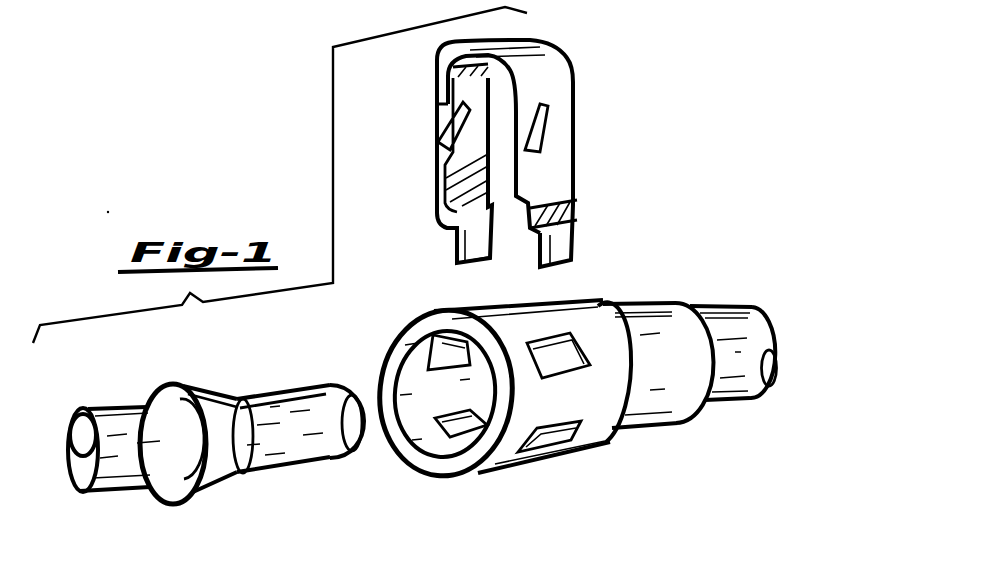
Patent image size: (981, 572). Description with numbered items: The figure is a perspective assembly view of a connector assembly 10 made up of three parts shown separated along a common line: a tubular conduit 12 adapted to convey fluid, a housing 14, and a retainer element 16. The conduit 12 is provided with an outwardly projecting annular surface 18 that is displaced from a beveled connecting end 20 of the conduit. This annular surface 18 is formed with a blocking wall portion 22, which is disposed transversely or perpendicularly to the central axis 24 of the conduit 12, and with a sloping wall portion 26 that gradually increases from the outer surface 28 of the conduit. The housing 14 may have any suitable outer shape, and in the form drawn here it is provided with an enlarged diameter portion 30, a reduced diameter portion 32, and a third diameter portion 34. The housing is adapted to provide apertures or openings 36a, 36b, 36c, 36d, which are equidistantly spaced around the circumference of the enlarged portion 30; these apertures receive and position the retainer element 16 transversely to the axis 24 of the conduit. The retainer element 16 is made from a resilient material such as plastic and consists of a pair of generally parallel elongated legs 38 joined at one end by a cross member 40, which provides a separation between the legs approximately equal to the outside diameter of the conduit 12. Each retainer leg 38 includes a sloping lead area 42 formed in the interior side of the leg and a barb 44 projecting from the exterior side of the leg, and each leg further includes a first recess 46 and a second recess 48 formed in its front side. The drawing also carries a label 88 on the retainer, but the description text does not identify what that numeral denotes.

The connector assembly 10 is at (724, 160).
The tubular conduit 12 is at (103, 403).
The housing 14 is at (678, 306).
The retainer element 16 is at (578, 131).
The annular surface 18 is at (219, 472).
The beveled connecting end 20 is at (353, 396).
The blocking wall portion 22 is at (168, 488).
The central axis 24 is at (117, 442).
The sloping wall portion 26 is at (204, 412).
The outer surface 28 is at (270, 412).
The enlarged diameter portion 30 is at (588, 428).
The reduced diameter portion 32 is at (743, 393).
The third diameter portion 34 is at (673, 425).
The aperture 36a is at (420, 325).
The aperture 36b is at (560, 350).
The aperture 36c is at (440, 425).
The aperture 36d is at (547, 437).
The retainer leg 38 is at (446, 147).
The cross member 40 is at (528, 42).
The sloping lead area 42 is at (453, 178).
The barb 44 is at (565, 207).
The first recess 46 is at (445, 127).
The second recess 48 is at (458, 244).
The slot 88 is at (541, 180).